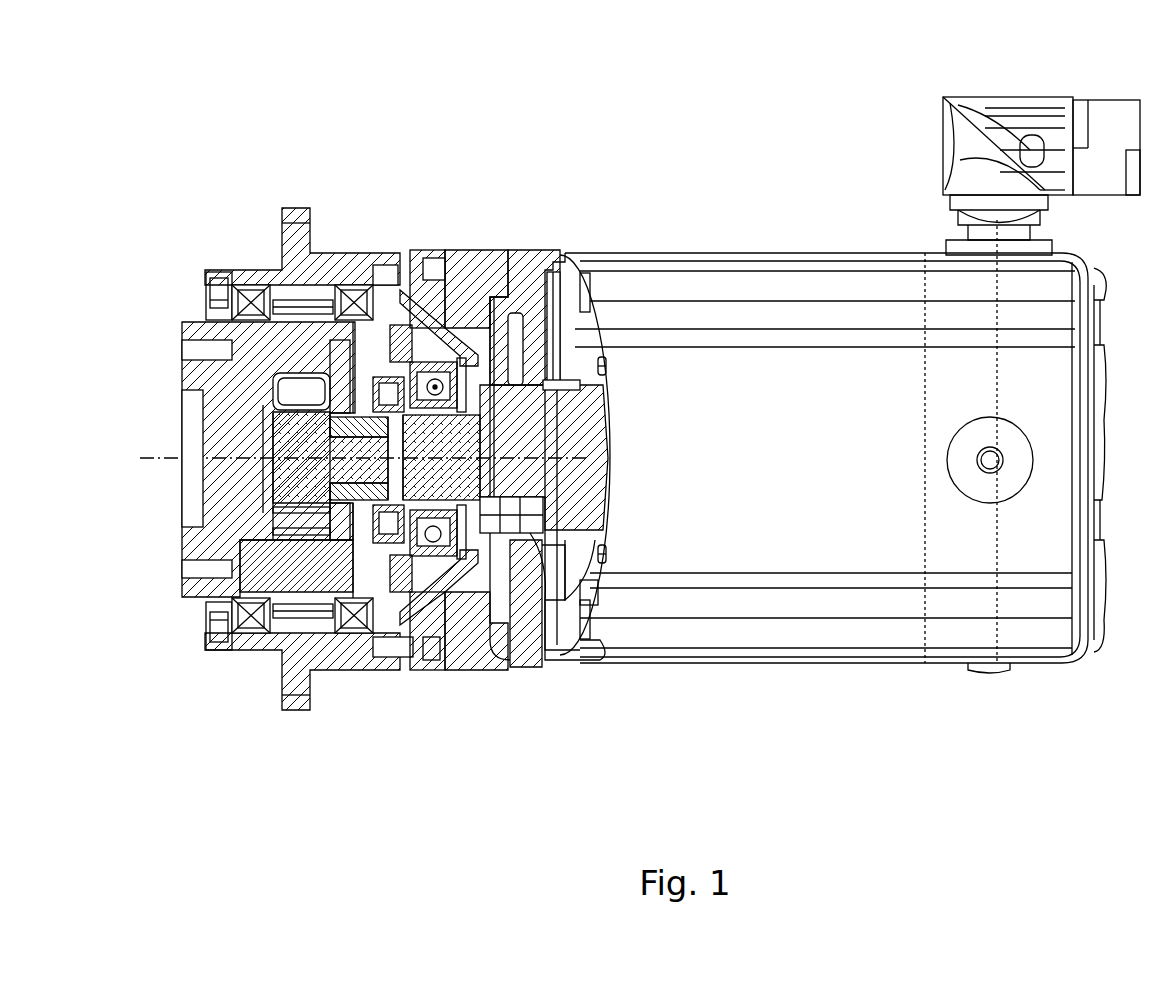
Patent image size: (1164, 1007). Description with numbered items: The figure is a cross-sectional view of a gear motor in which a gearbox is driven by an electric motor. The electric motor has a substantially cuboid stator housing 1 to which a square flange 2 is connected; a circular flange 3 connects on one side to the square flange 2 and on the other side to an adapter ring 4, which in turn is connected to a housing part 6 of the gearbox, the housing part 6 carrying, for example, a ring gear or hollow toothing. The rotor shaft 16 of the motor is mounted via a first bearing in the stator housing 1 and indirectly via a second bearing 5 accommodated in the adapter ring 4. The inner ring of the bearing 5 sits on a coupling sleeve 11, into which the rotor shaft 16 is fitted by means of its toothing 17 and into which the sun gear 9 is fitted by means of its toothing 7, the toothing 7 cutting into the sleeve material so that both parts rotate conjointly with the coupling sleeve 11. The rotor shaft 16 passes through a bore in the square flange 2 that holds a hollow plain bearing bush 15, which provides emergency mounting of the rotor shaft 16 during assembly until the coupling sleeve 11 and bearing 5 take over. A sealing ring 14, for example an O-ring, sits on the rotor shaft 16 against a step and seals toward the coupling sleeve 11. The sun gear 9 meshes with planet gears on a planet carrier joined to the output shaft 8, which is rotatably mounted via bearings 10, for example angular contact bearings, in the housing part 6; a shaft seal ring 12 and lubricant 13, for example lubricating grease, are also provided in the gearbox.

The stator housing 1 is at (793, 290).
The square flange 2 is at (528, 275).
The circular flange 3 is at (480, 283).
The adapter ring 4 is at (430, 302).
The bearing 5 is at (408, 340).
The housing part 6 is at (293, 265).
The toothing 7 is at (222, 306).
The output shaft 8 is at (232, 530).
The sun gear 9 is at (305, 482).
The bearing 10 is at (352, 617).
The coupling sleeve 11 is at (340, 477).
The shaft seal ring 12 is at (383, 490).
The lubricant 13 is at (428, 553).
The sealing ring 14 is at (517, 600).
The plain bearing bush 15 is at (527, 503).
The rotor shaft 16 is at (570, 488).
The toothing 17 is at (553, 600).